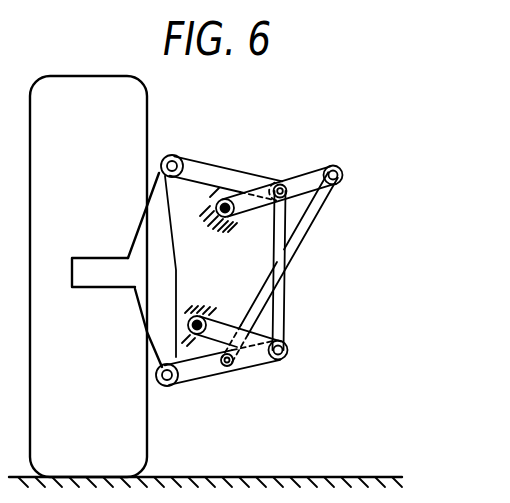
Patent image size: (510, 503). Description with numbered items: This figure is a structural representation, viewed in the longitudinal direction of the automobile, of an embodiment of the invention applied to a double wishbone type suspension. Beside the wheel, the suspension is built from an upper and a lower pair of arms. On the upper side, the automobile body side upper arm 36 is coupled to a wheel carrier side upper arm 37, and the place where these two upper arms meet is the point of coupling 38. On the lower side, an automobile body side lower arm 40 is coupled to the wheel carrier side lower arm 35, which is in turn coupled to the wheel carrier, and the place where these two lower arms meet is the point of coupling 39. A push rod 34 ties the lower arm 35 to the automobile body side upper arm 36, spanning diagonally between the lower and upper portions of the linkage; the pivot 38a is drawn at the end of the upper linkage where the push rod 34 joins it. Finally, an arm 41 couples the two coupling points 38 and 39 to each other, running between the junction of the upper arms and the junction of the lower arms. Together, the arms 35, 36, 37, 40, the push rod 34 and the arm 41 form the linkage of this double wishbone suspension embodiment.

The push rod 34 is at (309, 227).
The lower arm 35 is at (213, 372).
The automobile body side upper arm 36 is at (250, 212).
The wheel carrier side upper arm 37 is at (206, 168).
The point of coupling 38 is at (282, 184).
The pivot 38a is at (339, 166).
The point of coupling 39 is at (288, 358).
The automobile body side lower arm 40 is at (235, 323).
The arm 41 is at (292, 311).